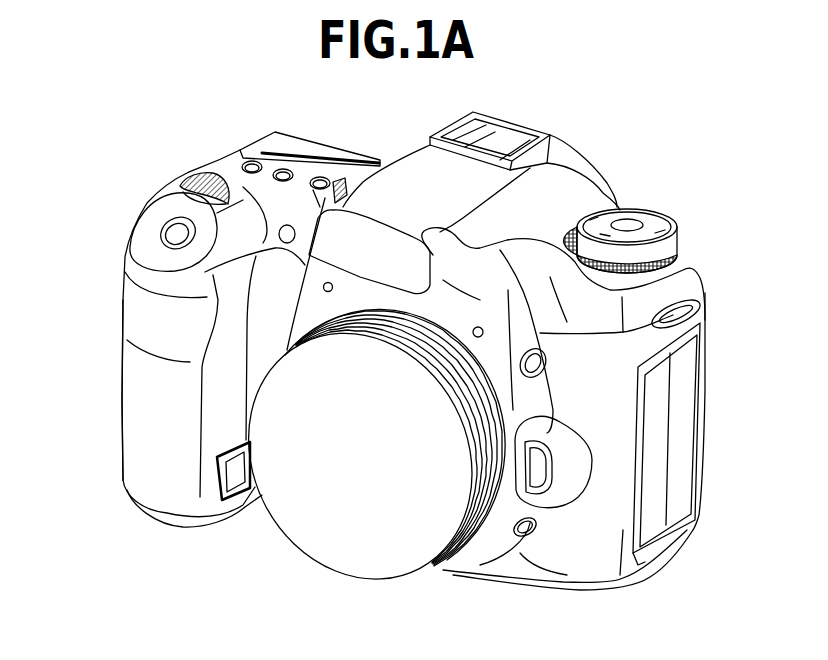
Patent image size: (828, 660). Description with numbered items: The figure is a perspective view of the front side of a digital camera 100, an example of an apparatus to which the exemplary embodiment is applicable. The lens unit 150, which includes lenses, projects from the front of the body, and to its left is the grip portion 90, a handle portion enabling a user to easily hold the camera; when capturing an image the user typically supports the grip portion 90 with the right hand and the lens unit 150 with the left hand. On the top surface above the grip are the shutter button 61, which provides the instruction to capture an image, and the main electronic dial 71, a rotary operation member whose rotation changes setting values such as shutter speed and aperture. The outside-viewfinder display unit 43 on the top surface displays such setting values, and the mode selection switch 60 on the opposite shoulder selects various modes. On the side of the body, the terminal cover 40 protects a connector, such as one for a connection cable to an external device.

The digital camera 100 is at (648, 128).
The outside-viewfinder display unit 43 is at (272, 145).
The main electronic dial 71 is at (186, 177).
The shutter button 61 is at (170, 233).
The mode selection switch 60 is at (657, 218).
The grip portion 90 is at (140, 402).
The terminal cover 40 is at (655, 453).
The lens unit 150 is at (447, 570).